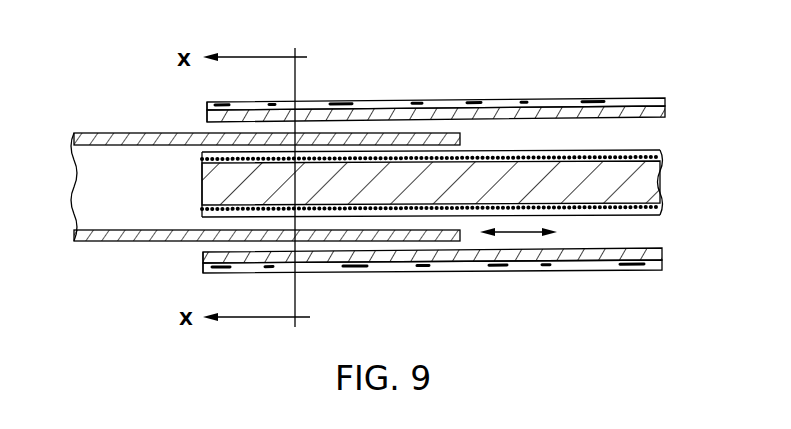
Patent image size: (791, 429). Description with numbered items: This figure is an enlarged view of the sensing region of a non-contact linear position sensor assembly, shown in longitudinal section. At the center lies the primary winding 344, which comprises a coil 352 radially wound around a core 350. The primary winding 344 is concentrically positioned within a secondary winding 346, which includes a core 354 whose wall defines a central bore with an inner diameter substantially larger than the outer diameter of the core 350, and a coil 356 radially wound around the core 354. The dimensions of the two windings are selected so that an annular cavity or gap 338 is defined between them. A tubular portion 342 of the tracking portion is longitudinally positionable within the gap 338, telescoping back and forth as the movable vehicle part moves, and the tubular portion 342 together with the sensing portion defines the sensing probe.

The annular cavity or gap 338 is at (568, 112).
The tubular portion 342 is at (90, 133).
The primary winding 344 is at (513, 152).
The secondary winding 346 is at (463, 97).
The core 350 is at (397, 144).
The coil 352 is at (200, 215).
The core 354 is at (206, 118).
The coil 356 is at (396, 170).